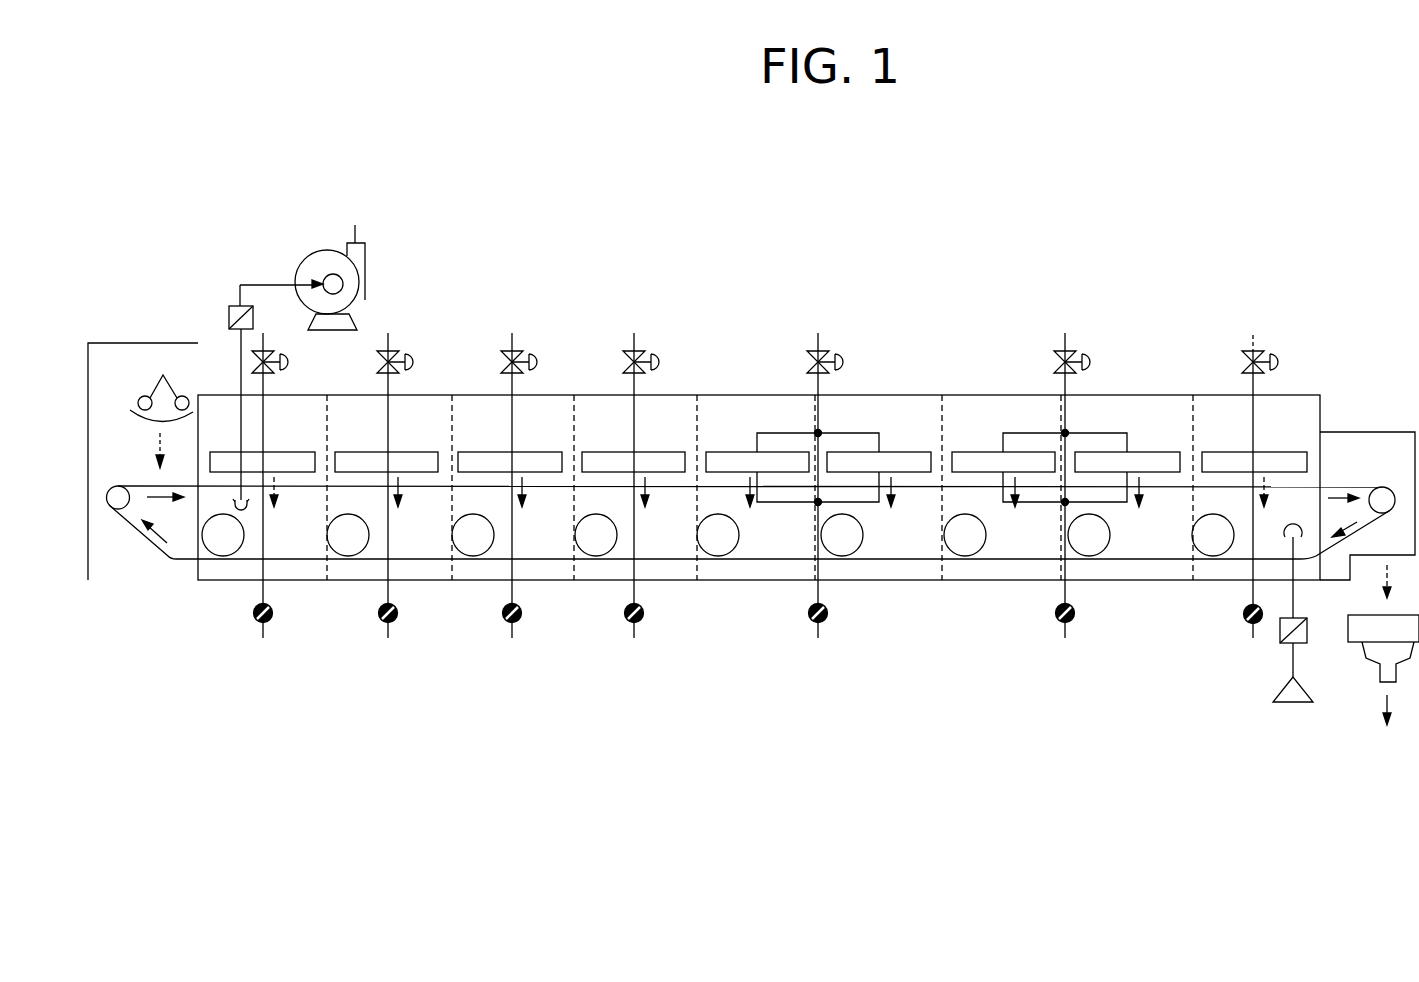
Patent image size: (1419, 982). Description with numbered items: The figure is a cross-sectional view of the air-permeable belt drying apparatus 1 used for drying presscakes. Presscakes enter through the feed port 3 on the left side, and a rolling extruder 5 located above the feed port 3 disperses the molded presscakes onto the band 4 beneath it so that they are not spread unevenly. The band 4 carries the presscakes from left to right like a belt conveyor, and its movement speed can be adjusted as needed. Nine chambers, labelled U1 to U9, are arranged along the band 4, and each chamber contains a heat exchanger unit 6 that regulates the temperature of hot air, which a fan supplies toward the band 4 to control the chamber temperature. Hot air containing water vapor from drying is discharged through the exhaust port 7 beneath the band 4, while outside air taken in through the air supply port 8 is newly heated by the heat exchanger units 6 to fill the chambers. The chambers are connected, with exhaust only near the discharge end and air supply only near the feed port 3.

The air-permeable belt drying apparatus 1 is at (668, 395).
The feed port 3 is at (153, 448).
The band 4 is at (143, 543).
The rolling extruder 5 is at (151, 384).
The heat exchanger unit 6 is at (367, 451).
The exhaust port 7 is at (247, 517).
The air supply port 8 is at (1283, 537).